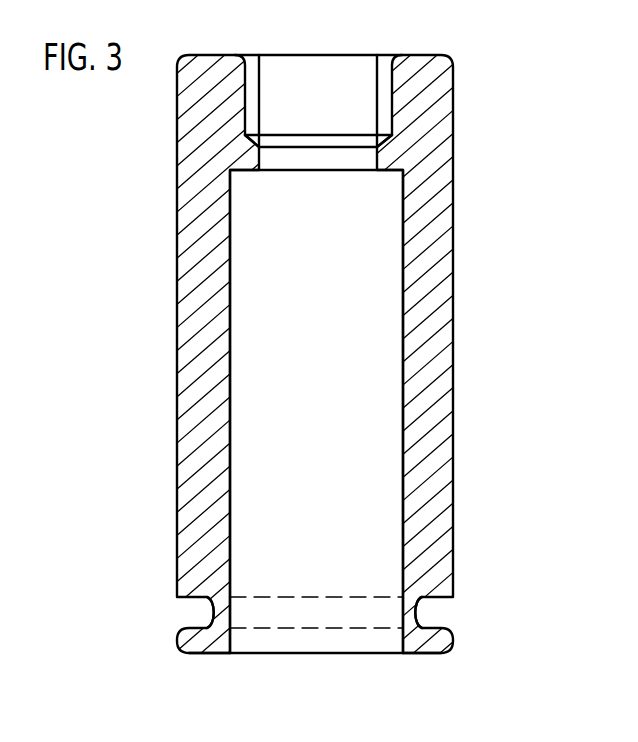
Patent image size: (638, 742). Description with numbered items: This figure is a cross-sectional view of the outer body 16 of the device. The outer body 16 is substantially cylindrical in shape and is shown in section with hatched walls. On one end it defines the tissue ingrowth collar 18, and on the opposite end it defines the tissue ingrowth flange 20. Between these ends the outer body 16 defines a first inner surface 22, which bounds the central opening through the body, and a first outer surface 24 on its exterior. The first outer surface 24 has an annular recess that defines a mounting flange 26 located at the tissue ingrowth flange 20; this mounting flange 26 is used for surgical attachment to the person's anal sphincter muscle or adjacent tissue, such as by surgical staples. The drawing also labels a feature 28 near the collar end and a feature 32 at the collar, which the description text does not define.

The outer body 16 is at (464, 74).
The tissue ingrowth collar 18 is at (305, 72).
The tissue ingrowth flange 20 is at (345, 653).
The first inner surface 22 is at (403, 358).
The first outer surface 24 is at (453, 348).
The mounting flange 26 is at (428, 617).
The shoulder / neck opening 28 is at (378, 158).
The sleeve / liner wall 32 is at (382, 88).